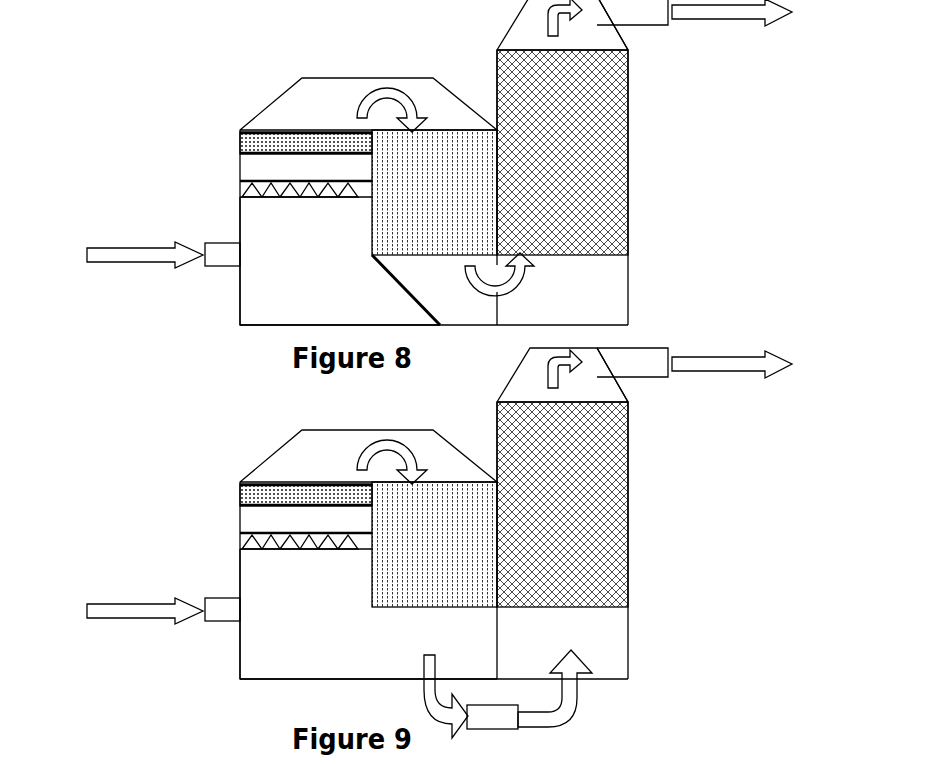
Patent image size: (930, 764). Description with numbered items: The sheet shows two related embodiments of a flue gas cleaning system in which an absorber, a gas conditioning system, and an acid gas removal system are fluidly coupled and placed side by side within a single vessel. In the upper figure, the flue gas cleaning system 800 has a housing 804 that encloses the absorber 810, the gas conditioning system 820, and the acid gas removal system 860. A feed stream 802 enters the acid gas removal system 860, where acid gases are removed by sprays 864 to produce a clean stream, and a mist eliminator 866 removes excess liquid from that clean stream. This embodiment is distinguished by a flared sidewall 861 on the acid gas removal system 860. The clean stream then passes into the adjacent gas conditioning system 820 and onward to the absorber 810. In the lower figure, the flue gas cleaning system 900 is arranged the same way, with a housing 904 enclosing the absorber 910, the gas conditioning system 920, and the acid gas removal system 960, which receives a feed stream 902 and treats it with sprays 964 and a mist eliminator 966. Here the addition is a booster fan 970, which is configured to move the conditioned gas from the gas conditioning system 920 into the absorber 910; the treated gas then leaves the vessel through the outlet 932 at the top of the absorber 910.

In FIG. 8, the flue gas cleaning system 800 is at (214, 54).
In FIG. 8, the feed stream 802 is at (132, 254).
In FIG. 8, the housing 804 is at (633, 126).
In FIG. 8, the absorber 810 is at (562, 152).
In FIG. 8, the gas conditioning system 820 is at (434, 192).
In FIG. 8, the acid gas removal system 860 is at (340, 261).
In FIG. 8, the flared sidewall 861 is at (404, 299).
In FIG. 8, the sprays 864 is at (238, 182).
In FIG. 8, the mist eliminator 866 is at (239, 141).
In FIG. 9, the flue gas cleaning system 900 is at (214, 434).
In FIG. 9, the feed stream 902 is at (132, 604).
In FIG. 9, the housing 904 is at (633, 470).
In FIG. 9, the absorber 910 is at (562, 504).
In FIG. 9, the gas conditioning system 920 is at (434, 544).
In FIG. 9, the exhaust gas outlet 932 is at (744, 348).
In FIG. 9, the acid gas removal system 960 is at (368, 614).
In FIG. 9, the sprays 964 is at (238, 533).
In FIG. 9, the mist eliminator 966 is at (239, 493).
In FIG. 9, the booster fan 970 is at (508, 734).